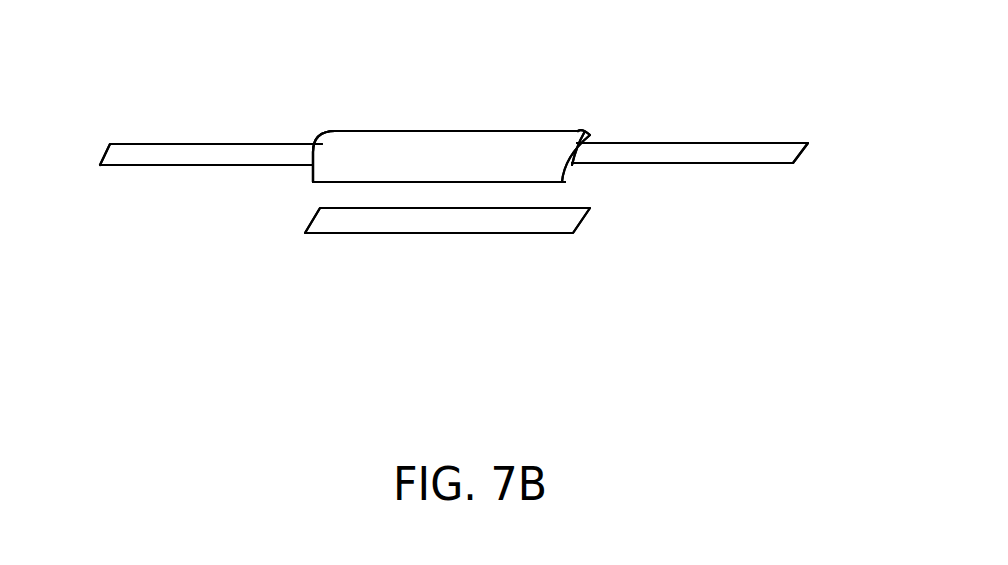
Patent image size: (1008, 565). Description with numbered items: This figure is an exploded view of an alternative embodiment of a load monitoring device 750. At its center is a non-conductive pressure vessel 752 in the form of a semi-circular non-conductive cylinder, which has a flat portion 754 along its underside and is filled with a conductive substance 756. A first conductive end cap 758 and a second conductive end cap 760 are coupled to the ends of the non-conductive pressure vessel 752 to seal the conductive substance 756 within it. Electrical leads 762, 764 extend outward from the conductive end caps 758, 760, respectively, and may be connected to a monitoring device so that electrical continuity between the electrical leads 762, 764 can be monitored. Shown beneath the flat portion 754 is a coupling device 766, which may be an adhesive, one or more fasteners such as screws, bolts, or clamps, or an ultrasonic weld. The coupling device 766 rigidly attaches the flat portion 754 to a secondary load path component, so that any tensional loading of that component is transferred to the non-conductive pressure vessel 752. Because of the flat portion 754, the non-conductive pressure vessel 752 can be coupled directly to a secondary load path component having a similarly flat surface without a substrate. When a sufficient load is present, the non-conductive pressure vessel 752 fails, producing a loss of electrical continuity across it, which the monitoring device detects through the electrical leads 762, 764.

The load monitoring device 750 is at (137, 80).
The non-conductive pressure vessel 752 is at (546, 130).
The flat portion 754 is at (330, 182).
The conductive substance 756 is at (400, 147).
The first conductive end cap 758 is at (588, 128).
The second conductive end cap 760 is at (330, 137).
The electrical lead 762 is at (718, 163).
The electrical lead 764 is at (152, 165).
The coupling device 766 is at (425, 233).